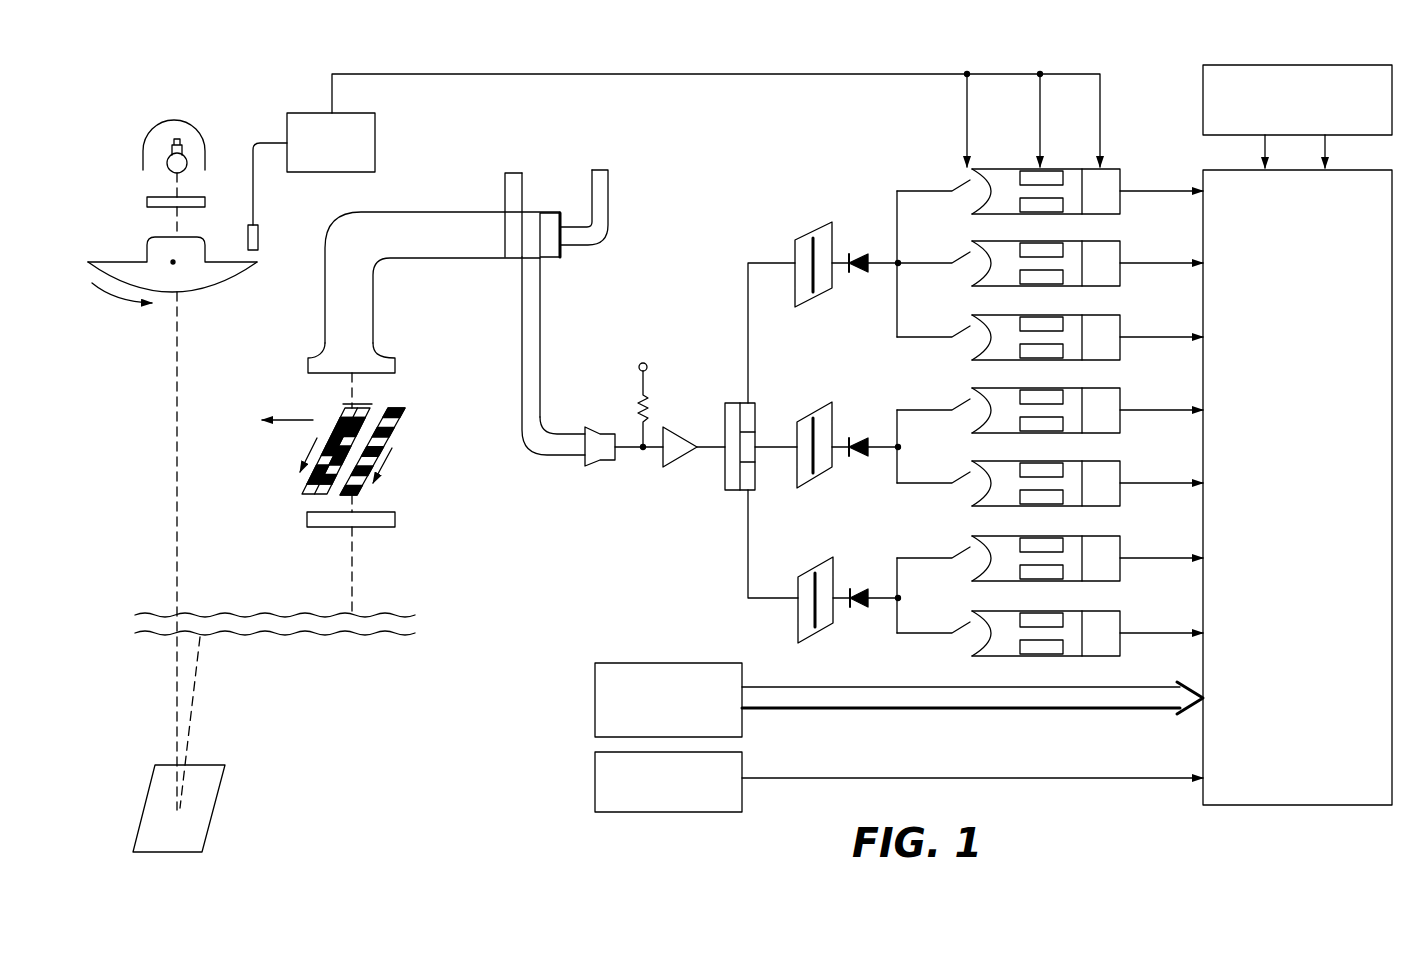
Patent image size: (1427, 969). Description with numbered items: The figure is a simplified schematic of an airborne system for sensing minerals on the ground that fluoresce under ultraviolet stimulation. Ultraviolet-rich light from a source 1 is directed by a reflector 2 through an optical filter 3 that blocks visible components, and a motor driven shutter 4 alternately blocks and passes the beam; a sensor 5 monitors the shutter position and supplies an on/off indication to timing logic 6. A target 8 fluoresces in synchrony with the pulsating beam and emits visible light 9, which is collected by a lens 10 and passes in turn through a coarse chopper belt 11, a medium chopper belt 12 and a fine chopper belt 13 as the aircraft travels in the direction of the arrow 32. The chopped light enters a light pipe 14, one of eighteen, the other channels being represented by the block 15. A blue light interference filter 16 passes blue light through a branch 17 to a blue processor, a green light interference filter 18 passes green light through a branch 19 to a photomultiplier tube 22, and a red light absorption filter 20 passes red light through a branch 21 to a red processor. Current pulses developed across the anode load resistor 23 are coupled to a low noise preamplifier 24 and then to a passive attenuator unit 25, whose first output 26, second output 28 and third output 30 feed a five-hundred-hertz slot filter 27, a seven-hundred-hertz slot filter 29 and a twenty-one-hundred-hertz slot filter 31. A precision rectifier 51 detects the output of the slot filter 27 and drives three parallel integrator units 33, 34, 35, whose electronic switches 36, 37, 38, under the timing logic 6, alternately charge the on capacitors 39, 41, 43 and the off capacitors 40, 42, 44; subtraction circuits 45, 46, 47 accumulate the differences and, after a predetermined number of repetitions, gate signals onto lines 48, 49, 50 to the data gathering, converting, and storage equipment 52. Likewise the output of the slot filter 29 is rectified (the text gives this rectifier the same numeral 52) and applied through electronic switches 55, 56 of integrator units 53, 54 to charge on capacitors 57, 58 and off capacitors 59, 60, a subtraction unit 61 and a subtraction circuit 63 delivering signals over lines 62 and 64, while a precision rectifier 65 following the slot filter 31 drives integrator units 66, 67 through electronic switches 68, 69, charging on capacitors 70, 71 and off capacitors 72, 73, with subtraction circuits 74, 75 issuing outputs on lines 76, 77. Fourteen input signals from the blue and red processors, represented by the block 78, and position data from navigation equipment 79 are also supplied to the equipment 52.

The source 1 is at (183, 160).
The reflector 2 is at (207, 160).
The optical filter 3 is at (204, 200).
The motor driven shutter 4 is at (220, 289).
The sensor 5 is at (259, 237).
The timing logic 6 is at (369, 122).
The target 8 is at (196, 808).
The visible light 9 is at (176, 463).
The lens 10 is at (307, 522).
The coarse chopper belt 11 is at (300, 484).
The medium chopper belt 12 is at (364, 407).
The fine chopper belt 13 is at (396, 438).
The light pipe 14 is at (434, 280).
The seventeen additional channels 15 is at (595, 703).
The blue light interference filter 16 is at (508, 228).
The branch 17 is at (521, 186).
The green light interference filter 18 is at (532, 220).
The branch 19 is at (527, 300).
The red light absorption filter 20 is at (560, 258).
The branch 21 is at (607, 192).
The photomultiplier tube 22 is at (601, 432).
The anode load resistor 23 is at (648, 406).
The low noise preamplifier 24 is at (688, 441).
The passive attenuator unit 25 is at (723, 483).
The first output 26 is at (747, 323).
The 500 Hz slot filter 27 is at (803, 240).
The second output 28 is at (772, 452).
The 700 Hz slot filter 29 is at (805, 418).
The third output 30 is at (748, 557).
The 2100 Hz slot filter 31 is at (807, 573).
The arrow 32 is at (293, 418).
The integrator unit 33 is at (991, 166).
The integrator unit 34 is at (998, 238).
The integrator unit 35 is at (998, 312).
The electronic switch 36 is at (960, 180).
The electronic switch 37 is at (960, 256).
The electronic switch 38 is at (963, 328).
The on capacitor 39 is at (1058, 169).
The off capacitor 40 is at (1063, 213).
The on capacitor 41 is at (1042, 240).
The off capacitor 42 is at (1047, 286).
The on capacitor 43 is at (1054, 316).
The off capacitor 44 is at (1058, 360).
The subtraction circuit 45 is at (1120, 205).
The subtraction circuit 46 is at (1123, 284).
The subtraction circuit 47 is at (1121, 359).
The line 48 is at (1142, 188).
The line 49 is at (1147, 260).
The line 50 is at (1147, 334).
The precision rectifier 51 is at (857, 272).
The data gathering, converting, and storage equipment 52 is at (858, 458).
The integrator unit 53 is at (1000, 386).
The integrator unit 54 is at (1003, 457).
The electronic switch 55 is at (968, 402).
The electronic switch 56 is at (972, 472).
The on capacitor 57 is at (1033, 386).
The on capacitor 58 is at (1032, 459).
The off capacitor 59 is at (1052, 433).
The off capacitor 60 is at (1060, 507).
The subtraction unit 61 is at (1123, 428).
The line 62 is at (1148, 409).
The subtraction circuit 63 is at (1121, 498).
The line 64 is at (1148, 481).
The precision rectifier 65 is at (857, 607).
The integrator unit 66 is at (1003, 533).
The integrator unit 67 is at (1000, 607).
The electronic switch 68 is at (960, 552).
The electronic switch 69 is at (962, 626).
The on capacitor 70 is at (1042, 535).
The on capacitor 71 is at (1060, 610).
The off capacitor 72 is at (1042, 584).
The off capacitor 73 is at (1057, 657).
The subtraction circuit 74 is at (1145, 557).
The subtraction circuit 75 is at (1122, 651).
The line 76 is at (1123, 571).
The line 77 is at (1167, 631).
The 14 input signals 78 is at (1203, 102).
The navigation equipment 79 is at (595, 782).